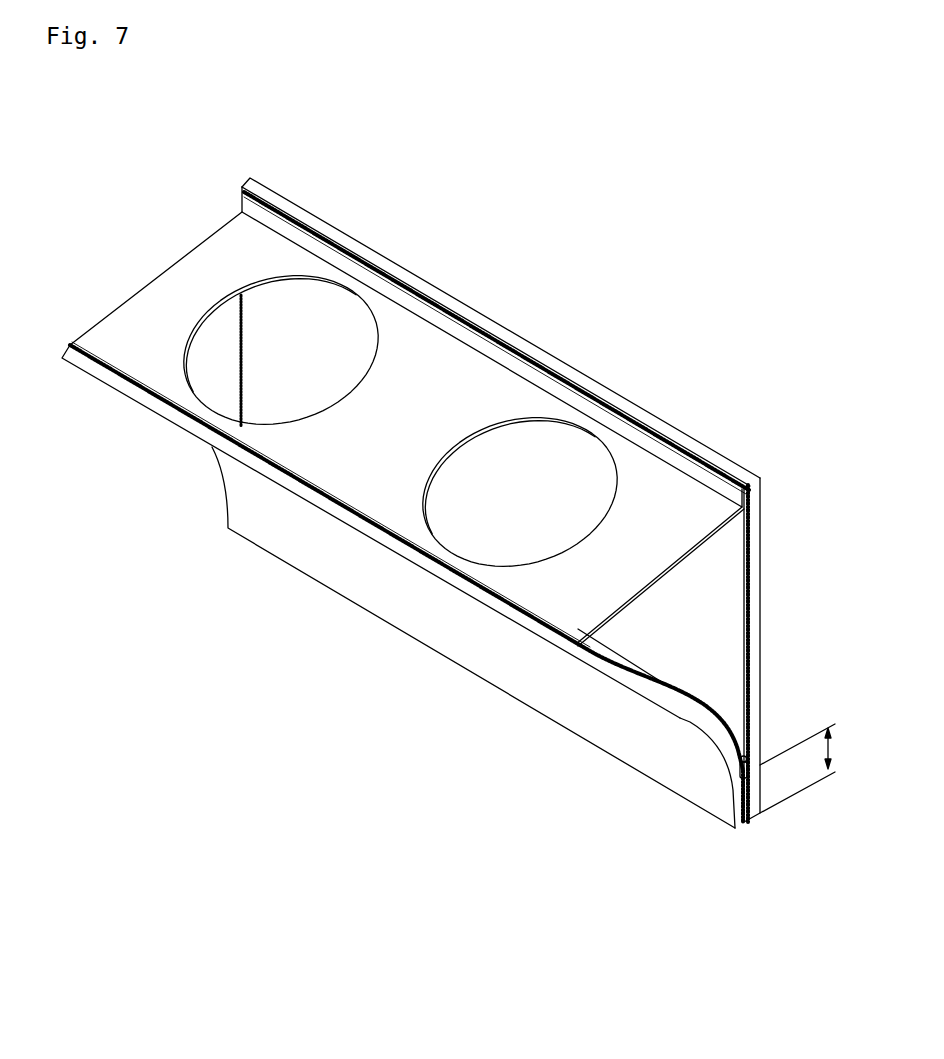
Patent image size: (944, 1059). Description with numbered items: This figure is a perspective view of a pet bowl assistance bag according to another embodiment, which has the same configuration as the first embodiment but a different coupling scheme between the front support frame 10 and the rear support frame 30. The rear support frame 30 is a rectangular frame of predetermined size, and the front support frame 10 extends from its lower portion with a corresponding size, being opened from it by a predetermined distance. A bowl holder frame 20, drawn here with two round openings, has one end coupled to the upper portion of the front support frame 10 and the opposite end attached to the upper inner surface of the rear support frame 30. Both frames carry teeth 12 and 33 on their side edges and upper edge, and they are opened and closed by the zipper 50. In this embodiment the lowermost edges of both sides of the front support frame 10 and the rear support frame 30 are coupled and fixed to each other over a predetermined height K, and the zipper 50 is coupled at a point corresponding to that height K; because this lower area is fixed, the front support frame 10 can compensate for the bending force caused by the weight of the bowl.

The front support frame 10 is at (355, 612).
The teeth 12 is at (668, 688).
The bowl holder frame 20 is at (150, 250).
The rear support frame 30 is at (527, 298).
The teeth 33 is at (763, 632).
The zipper 50 is at (738, 772).
The predetermined height K is at (806, 768).